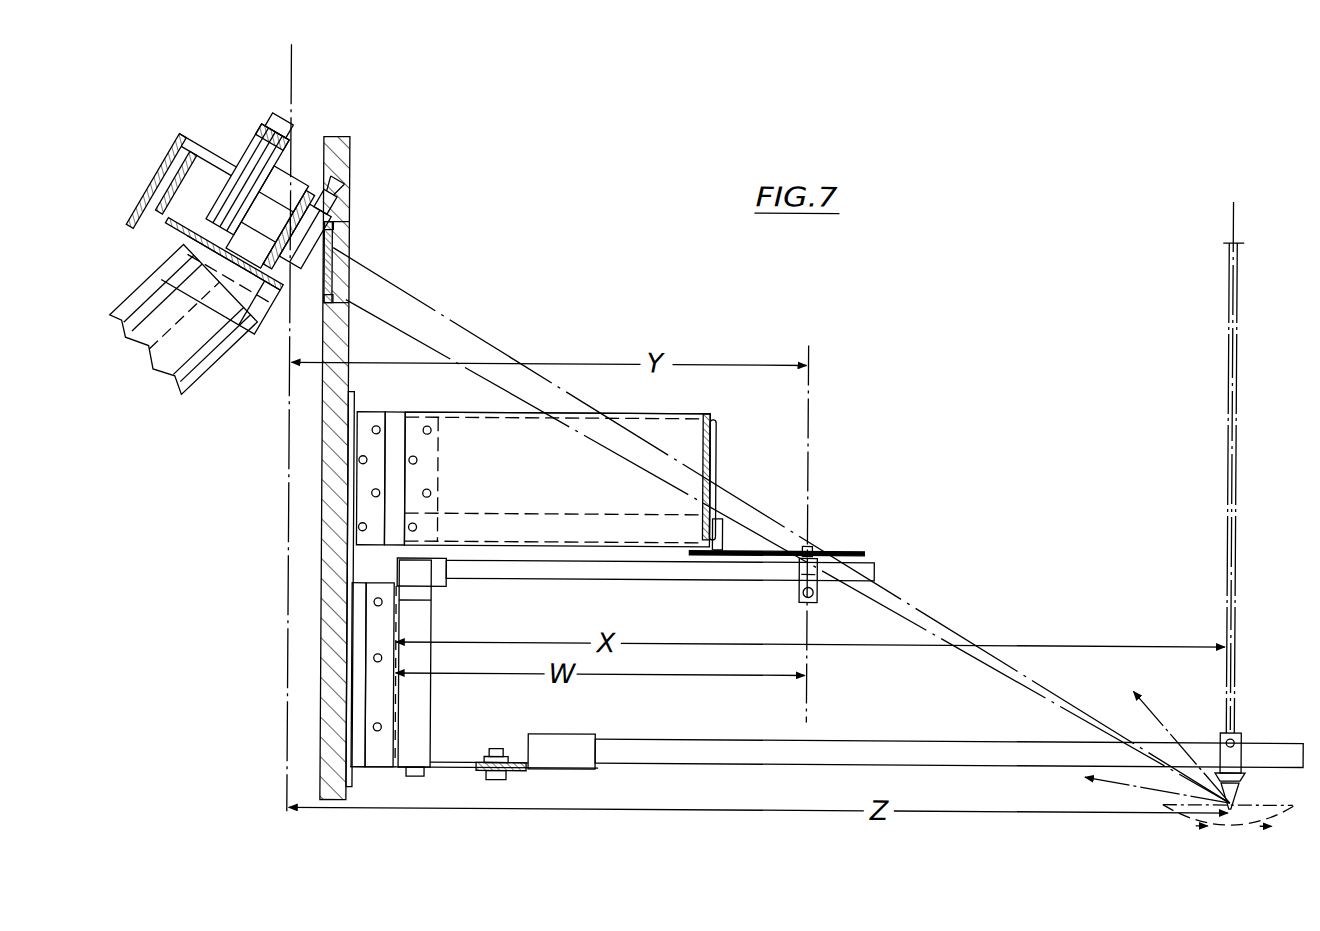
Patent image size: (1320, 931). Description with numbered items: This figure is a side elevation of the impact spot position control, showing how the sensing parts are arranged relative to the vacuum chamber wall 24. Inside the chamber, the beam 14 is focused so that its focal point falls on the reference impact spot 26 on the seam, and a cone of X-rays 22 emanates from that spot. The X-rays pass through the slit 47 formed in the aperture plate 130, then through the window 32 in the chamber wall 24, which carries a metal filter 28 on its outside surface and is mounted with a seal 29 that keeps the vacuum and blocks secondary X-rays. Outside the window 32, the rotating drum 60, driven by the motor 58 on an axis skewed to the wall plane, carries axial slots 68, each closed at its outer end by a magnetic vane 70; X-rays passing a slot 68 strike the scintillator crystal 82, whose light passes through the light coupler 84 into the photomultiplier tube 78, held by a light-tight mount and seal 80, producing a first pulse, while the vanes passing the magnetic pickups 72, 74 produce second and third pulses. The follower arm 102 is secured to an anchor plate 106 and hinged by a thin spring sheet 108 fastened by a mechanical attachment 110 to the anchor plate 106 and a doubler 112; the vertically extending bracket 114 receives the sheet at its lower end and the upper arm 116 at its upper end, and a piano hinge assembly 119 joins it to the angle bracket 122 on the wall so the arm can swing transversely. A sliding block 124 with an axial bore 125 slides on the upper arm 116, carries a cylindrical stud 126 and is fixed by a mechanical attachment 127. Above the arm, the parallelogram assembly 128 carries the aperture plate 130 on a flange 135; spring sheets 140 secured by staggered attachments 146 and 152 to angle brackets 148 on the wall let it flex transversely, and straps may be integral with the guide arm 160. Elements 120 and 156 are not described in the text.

The beam 14 is at (1228, 480).
The cone of X-rays 22 is at (960, 630).
The vacuum chamber wall 24 is at (320, 708).
The reference impact spot 26 is at (1244, 799).
The metal filter 28 is at (350, 266).
The seal 29 is at (334, 226).
The window 32 is at (340, 240).
The slit 47 is at (718, 438).
The motor 58 is at (192, 392).
The rotating drum 60 is at (162, 215).
The slots 68 is at (178, 176).
The magnetic vane 70 is at (204, 150).
The magnetic pickup 72 is at (336, 196).
The magnetic pickup 74 is at (304, 158).
The photomultiplier tube 78 is at (274, 130).
The light-tight mount and seal 80 is at (236, 142).
The scintillator crystal 82 is at (268, 310).
The light coupler 84 is at (226, 330).
The follower arm 102 is at (960, 746).
The anchor plate 106 is at (580, 772).
The spring sheet 108 is at (456, 760).
The mechanical attachment 110 is at (498, 748).
The doubler 112 is at (516, 760).
The vertically extending bracket 114 is at (434, 662).
The upper arm 116 is at (596, 574).
The piano hinge assembly 119 is at (430, 636).
The wall bracket 120 is at (356, 582).
The angle bracket 122 is at (364, 769).
The sliding block 124 is at (820, 584).
The axial bore 125 is at (800, 590).
The cylindrical stud 126 is at (812, 546).
The mechanical attachment 127 is at (812, 598).
The parallelogram assembly 128 is at (636, 410).
The aperture plate 130 is at (712, 418).
The flange 135 is at (717, 473).
The spring sheet 140 is at (405, 414).
The attachments 146 is at (430, 492).
The angle bracket 148 is at (350, 513).
The attachments 152 is at (363, 456).
The beam boundary line 156 is at (496, 356).
The guide arm 160 is at (868, 552).